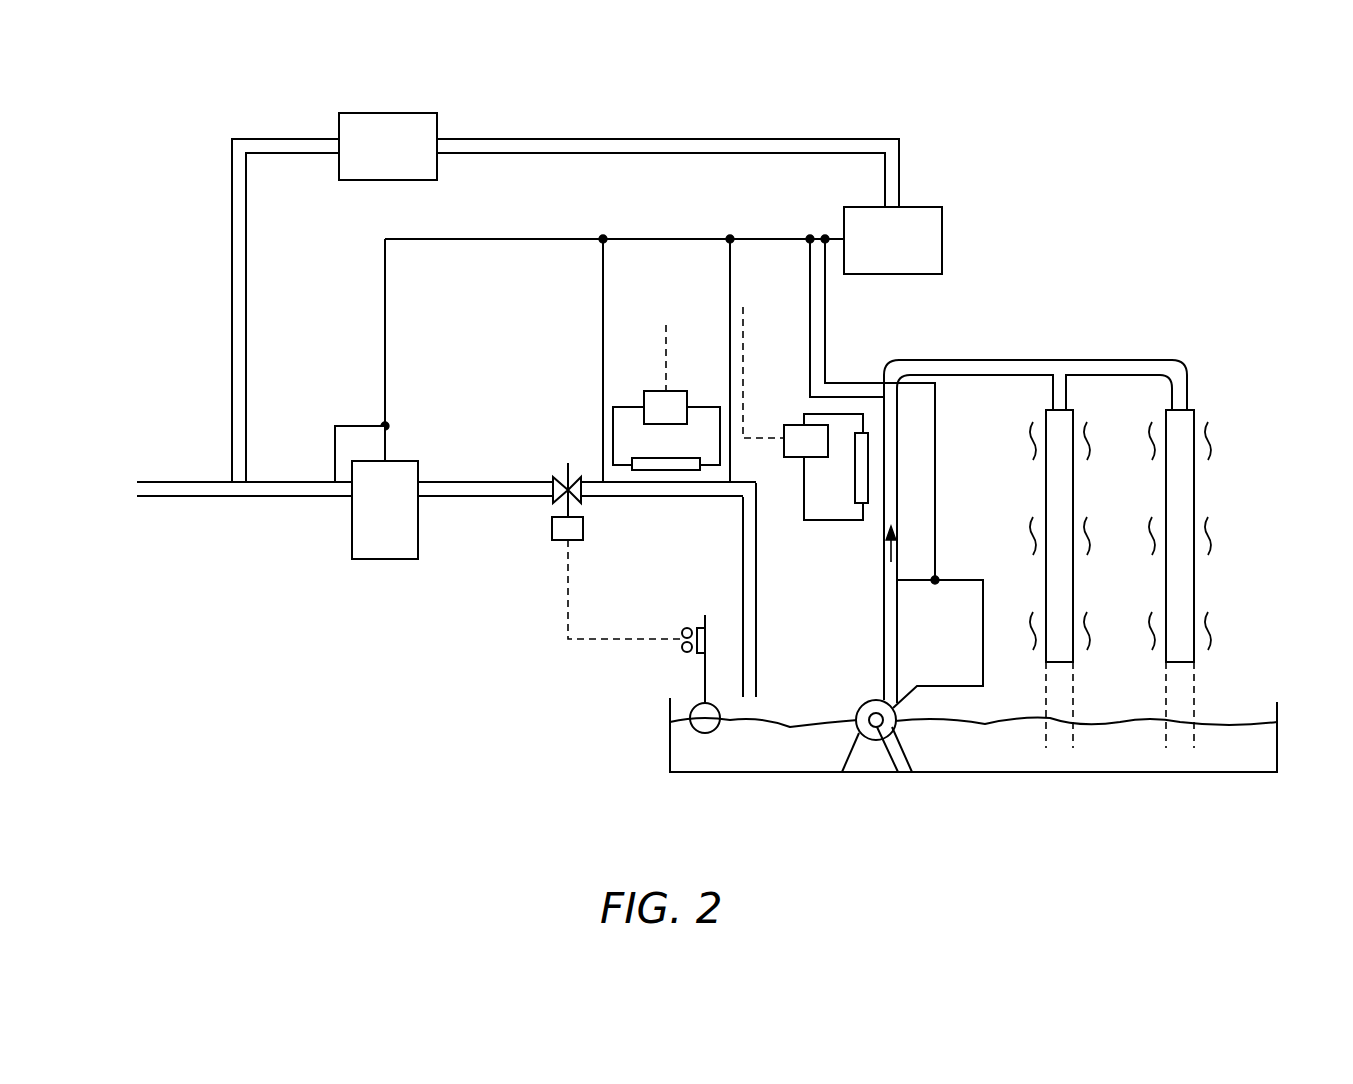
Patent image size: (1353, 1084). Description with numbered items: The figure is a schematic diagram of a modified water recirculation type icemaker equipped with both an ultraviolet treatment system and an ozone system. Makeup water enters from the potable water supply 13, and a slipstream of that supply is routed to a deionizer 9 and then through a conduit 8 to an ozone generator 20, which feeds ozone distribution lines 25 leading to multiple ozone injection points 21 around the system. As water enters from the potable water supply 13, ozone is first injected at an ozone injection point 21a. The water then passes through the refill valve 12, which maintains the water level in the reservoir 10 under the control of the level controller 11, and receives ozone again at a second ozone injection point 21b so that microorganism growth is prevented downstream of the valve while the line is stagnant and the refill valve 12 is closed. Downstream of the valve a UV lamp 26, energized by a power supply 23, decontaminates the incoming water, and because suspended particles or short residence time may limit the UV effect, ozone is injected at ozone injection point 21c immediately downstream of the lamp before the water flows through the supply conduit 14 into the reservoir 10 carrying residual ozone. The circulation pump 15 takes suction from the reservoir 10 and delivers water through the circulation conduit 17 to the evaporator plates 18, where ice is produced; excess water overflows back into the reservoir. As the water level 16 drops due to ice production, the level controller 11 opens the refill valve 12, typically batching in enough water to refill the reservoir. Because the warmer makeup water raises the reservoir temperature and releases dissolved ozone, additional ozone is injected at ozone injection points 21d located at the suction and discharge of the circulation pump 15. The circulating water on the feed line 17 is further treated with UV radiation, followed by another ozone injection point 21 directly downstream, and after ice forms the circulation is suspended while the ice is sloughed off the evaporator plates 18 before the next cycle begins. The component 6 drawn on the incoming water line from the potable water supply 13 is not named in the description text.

The flow control valve / regulator 6 is at (383, 559).
The bypass line 8 is at (283, 138).
The heat exchanger / cooler 9 is at (388, 112).
The tank 10 is at (1277, 747).
The level switch 11 is at (705, 685).
The valve 12 is at (557, 498).
The supply line 13 is at (288, 496).
The return line 14 is at (743, 587).
The pump 15 is at (865, 757).
The float 16 is at (775, 722).
The circulation pipe 17 is at (1145, 360).
The heaters 18 is at (1197, 503).
The controller 20 is at (920, 207).
The signal line 21 is at (387, 450).
The sensor 21a is at (333, 475).
The signal line branch 21b is at (602, 498).
The signal line branch 21c is at (740, 478).
The pump line 21d is at (900, 597).
The pressure switch 23 is at (645, 390).
The control line 25 is at (762, 239).
The resistor 26 is at (670, 457).